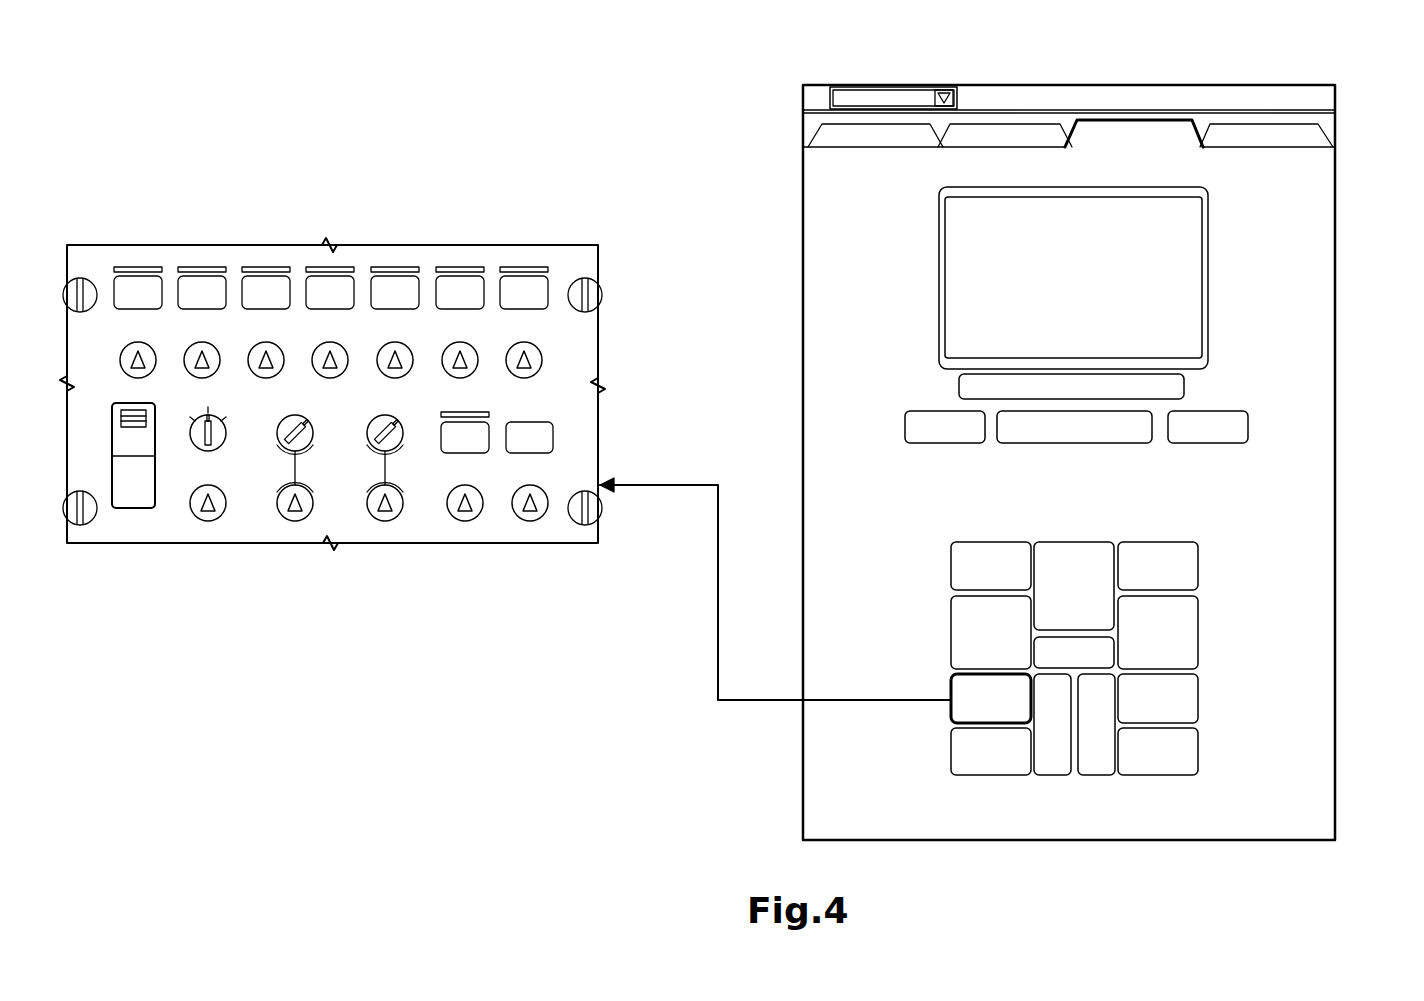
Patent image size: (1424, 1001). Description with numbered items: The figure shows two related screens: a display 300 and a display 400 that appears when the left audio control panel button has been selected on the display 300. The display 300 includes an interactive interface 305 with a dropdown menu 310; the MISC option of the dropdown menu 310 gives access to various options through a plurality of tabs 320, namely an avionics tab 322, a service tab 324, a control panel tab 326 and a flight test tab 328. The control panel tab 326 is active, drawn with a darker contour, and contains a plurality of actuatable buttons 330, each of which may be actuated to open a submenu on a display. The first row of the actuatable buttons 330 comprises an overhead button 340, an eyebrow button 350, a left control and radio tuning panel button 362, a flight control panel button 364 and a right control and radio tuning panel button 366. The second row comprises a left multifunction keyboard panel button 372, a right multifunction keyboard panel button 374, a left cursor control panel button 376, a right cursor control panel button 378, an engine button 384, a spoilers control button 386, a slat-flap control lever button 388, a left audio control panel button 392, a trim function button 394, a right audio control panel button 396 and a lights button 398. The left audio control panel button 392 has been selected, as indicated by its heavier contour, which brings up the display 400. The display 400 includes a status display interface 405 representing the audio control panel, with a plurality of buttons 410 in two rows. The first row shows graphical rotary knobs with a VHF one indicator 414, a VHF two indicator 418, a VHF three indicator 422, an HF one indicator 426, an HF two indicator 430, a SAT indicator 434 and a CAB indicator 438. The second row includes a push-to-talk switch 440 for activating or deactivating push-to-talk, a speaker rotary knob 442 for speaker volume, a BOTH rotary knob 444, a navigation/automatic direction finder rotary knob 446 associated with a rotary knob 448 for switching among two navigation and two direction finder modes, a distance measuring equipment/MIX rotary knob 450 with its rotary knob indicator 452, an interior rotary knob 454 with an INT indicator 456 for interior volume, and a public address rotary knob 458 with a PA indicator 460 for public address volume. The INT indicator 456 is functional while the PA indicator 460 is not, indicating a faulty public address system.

The display 300 is at (1326, 73).
The interactive interface 305 is at (800, 108).
The dropdown menu 310 is at (888, 88).
The tabs 320 is at (1032, 155).
The avionics tab 322 is at (878, 150).
The service tab 324 is at (958, 150).
The control (CTRL) panel tab 326 is at (1075, 150).
The flight test (FLT) tab 328 is at (1288, 150).
The actuatable buttons 330 is at (1147, 502).
The overhead button 340 is at (1202, 318).
The eyebrow button 350 is at (1186, 385).
The left control and radio tuning panel (L CTP) button 362 is at (942, 445).
The flight control panel (FCP) button 364 is at (1108, 445).
The right control and radio tuning panel button 366 is at (1222, 445).
The left multifunction keyboard panel (L MKP) button 372 is at (953, 553).
The right multifunction keyboard panel (R MKP) button 374 is at (1196, 552).
The left cursor control panel (L CCP) button 376 is at (953, 612).
The right cursor control panel (R CCP) button 378 is at (1196, 610).
The engine (ENG) button 384 is at (1106, 655).
The spoilers control (SPLRS) button 386 is at (1050, 777).
The slat-flap control lever (SFCL) button 388 is at (1102, 777).
The left audio control panel (L ACP) button 392 is at (950, 682).
The trim function (TRIM) button 394 is at (950, 751).
The right audio control panel (R ACP) button 396 is at (1194, 700).
The lights (LTS) button 398 is at (1196, 751).
The display 400 is at (380, 365).
The status display interface 405 is at (590, 248).
The buttons 410 is at (556, 316).
The VHF 1 indicator 414 is at (136, 262).
The VHF 2 indicator 418 is at (200, 262).
The VHF 3 indicator 422 is at (264, 262).
The HF 1 indicator 426 is at (328, 262).
The HF 2 indicator 430 is at (392, 262).
The SAT indicator 434 is at (456, 262).
The CAB indicator 438 is at (520, 262).
The push-to-talk (PPT) switch 440 is at (152, 495).
The speaker (SPKR) rotary knob 442 is at (211, 522).
The BOTH rotary knob 444 is at (222, 446).
The navigation (NAV)/automatic direction finder (ADF) rotary knob 446 is at (305, 447).
The rotary knob 448 is at (298, 522).
The distance measuring equipment (DME)/MIX rotary knob 450 is at (395, 446).
The rotary knob indicator 452 is at (386, 522).
The interior (INT) rotary knob 454 is at (468, 522).
The INT indicator 456 is at (454, 412).
The public address (PA) rotary knob 458 is at (533, 522).
The PA indicator 460 is at (528, 420).